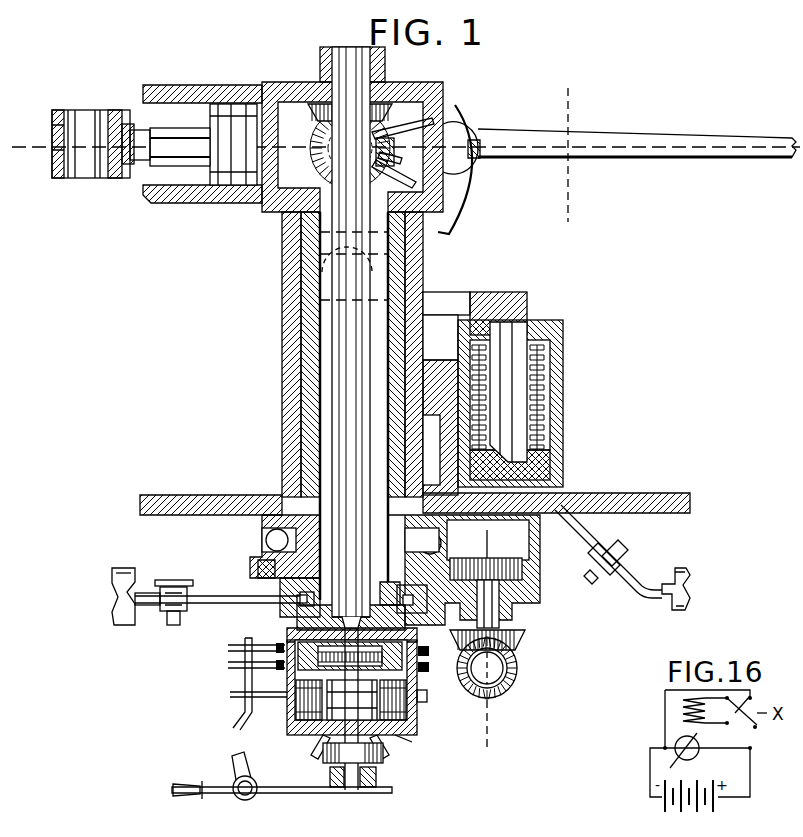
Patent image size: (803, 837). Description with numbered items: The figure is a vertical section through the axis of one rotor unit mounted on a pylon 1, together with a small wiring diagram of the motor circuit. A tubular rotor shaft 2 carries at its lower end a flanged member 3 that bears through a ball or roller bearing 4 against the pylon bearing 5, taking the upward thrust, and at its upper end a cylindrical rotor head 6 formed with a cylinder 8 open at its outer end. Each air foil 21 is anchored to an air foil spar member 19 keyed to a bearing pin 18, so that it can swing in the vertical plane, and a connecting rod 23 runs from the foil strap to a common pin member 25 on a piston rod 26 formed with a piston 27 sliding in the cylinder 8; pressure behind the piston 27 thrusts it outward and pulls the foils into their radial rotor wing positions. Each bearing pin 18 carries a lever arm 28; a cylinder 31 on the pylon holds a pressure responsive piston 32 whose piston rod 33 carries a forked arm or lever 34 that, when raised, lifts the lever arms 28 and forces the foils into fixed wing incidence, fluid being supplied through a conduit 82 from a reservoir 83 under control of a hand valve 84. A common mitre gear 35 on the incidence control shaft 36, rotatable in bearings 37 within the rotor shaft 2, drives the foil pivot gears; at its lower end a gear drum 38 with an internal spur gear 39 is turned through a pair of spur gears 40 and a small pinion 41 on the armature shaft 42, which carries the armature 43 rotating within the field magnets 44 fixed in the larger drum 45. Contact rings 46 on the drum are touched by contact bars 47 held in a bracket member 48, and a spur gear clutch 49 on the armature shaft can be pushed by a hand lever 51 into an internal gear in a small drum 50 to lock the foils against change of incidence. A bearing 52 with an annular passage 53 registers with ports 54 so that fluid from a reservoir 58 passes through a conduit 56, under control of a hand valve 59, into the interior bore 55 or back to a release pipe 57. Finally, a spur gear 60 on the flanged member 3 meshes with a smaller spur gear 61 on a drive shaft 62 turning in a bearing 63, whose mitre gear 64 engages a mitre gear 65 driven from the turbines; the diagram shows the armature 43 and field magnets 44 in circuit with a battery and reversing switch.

In FIG. 1, the pylon 1 is at (290, 405).
In FIG. 1, the rotor shaft 2 is at (756, 142).
In FIG. 1, the flanged member 3 is at (278, 565).
In FIG. 1, the ball or roller bearing 4 is at (268, 526).
In FIG. 1, the pylon bearing 5 is at (266, 536).
In FIG. 1, the rotor head 6 is at (262, 212).
In FIG. 1, the cylinder 8 is at (168, 205).
In FIG. 1, the bearing pin 18 is at (435, 126).
In FIG. 1, the air foil spar member 19 is at (473, 132).
In FIG. 1, the air foil 21 is at (640, 134).
In FIG. 1, the connecting rod 23 is at (52, 122).
In FIG. 1, the common pin member 25 is at (82, 122).
In FIG. 1, the piston rod 26 is at (156, 160).
In FIG. 1, the piston 27 is at (232, 105).
In FIG. 1, the lever arm 28 is at (452, 226).
In FIG. 1, the cylinder 31 is at (563, 392).
In FIG. 1, the pressure responsive piston 32 is at (555, 476).
In FIG. 1, the piston rod 33 is at (525, 322).
In FIG. 1, the forked arm or lever 34 is at (447, 300).
In FIG. 1, the common mitre gear 35 is at (318, 110).
In FIG. 1, the incidence control shaft 36 is at (345, 418).
In FIG. 1, the bearings 37 is at (380, 78).
In FIG. 1, the gear drum 38 is at (292, 636).
In FIG. 1, the internal spur gear 39 is at (298, 670).
In FIG. 1, the spur gears 40 is at (425, 627).
In FIG. 1, the small pinion 41 is at (343, 670).
In FIG. 1, the armature shaft 42 is at (330, 737).
In FIG. 1, the armature 43 is at (305, 706).
In FIG. 16, the armature 43 is at (700, 757).
In FIG. 1, the field magnets 44 is at (418, 716).
In FIG. 16, the field magnets 44 is at (705, 710).
In FIG. 1, the larger drum 45 is at (415, 740).
In FIG. 1, the contact rings 46 is at (434, 667).
In FIG. 1, the contact springs or bars 47 is at (228, 660).
In FIG. 1, the bracket member 48 is at (232, 682).
In FIG. 1, the spur gear clutch 49 is at (385, 784).
In FIG. 1, the small drum 50 is at (384, 752).
In FIG. 1, the hand lever 51 is at (186, 796).
In FIG. 1, the bearing 52 is at (278, 588).
In FIG. 1, the annular passage 53 is at (278, 612).
In FIG. 1, the ports 54 is at (427, 600).
In FIG. 1, the interior bore 55 is at (383, 262).
In FIG. 1, the conduit 56 is at (193, 592).
In FIG. 1, the release pipe 57 is at (172, 625).
In FIG. 1, the reservoir 58 is at (122, 568).
In FIG. 1, the hand valve 59 is at (165, 585).
In FIG. 1, the spur gear 60 is at (260, 565).
In FIG. 1, the smaller spur gear 61 is at (508, 558).
In FIG. 1, the drive shaft 62 is at (520, 617).
In FIG. 1, the bearing 63 is at (530, 600).
In FIG. 1, the mitre gear 64 is at (527, 637).
In FIG. 1, the mitre gear 65 is at (513, 688).
In FIG. 1, the conduit 82 is at (595, 538).
In FIG. 1, the pressure reservoir or supply means 83 is at (688, 599).
In FIG. 1, the hand valve 84 is at (634, 556).